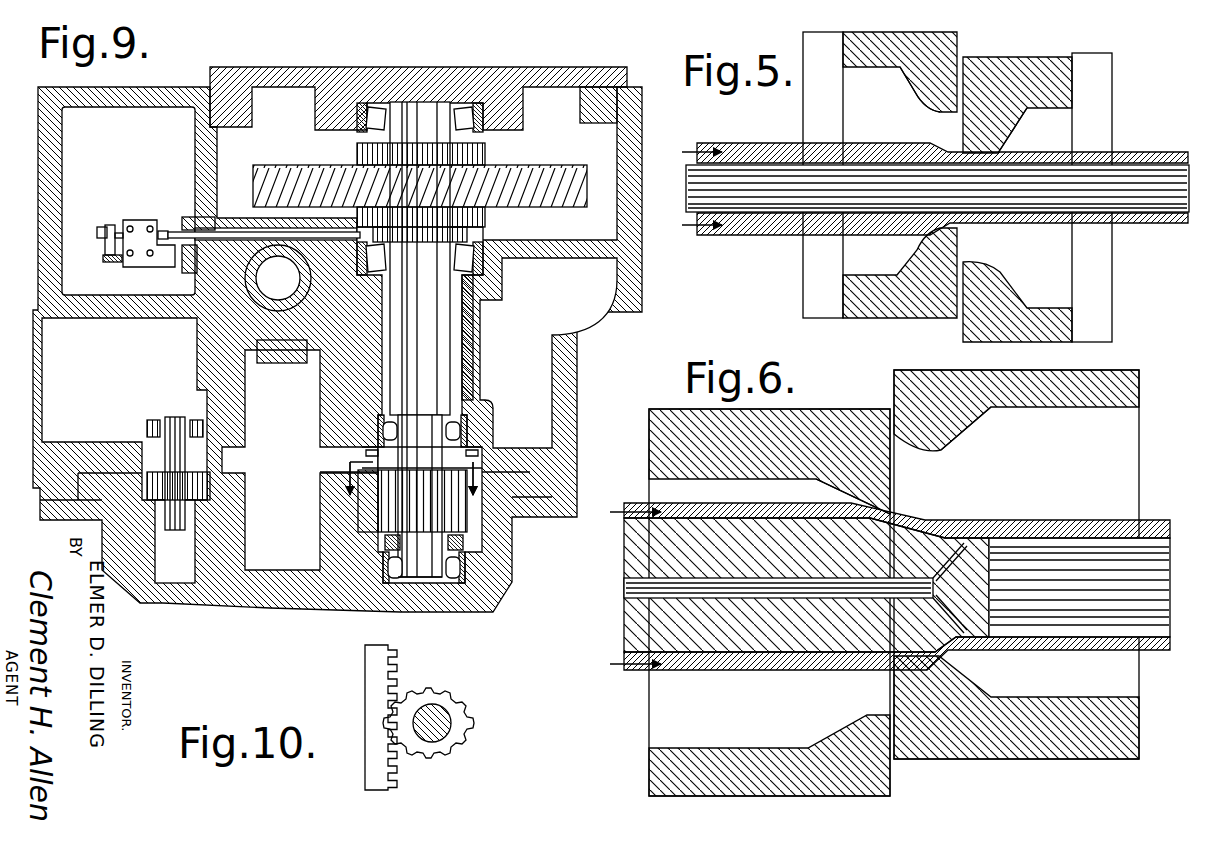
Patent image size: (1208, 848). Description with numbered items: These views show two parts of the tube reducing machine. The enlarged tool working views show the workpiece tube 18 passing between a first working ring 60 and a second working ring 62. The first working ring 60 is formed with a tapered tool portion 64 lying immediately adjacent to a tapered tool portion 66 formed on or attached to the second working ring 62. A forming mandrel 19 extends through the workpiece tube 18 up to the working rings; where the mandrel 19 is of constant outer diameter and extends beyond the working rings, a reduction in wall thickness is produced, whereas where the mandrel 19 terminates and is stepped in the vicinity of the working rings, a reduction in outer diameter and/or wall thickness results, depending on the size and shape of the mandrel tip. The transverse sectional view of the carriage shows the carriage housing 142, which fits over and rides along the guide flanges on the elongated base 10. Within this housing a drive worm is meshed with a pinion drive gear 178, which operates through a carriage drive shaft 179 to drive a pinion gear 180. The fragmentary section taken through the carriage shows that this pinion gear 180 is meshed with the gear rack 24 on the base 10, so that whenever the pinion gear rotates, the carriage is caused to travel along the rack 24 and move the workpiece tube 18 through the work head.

In FIG. 9, the carriage housing 142 is at (303, 72).
In FIG. 9, the pinion drive gear 178 is at (307, 170).
In FIG. 9, the carriage drive shaft 179 is at (473, 346).
In FIG. 9, the pinion gear 180 is at (408, 502).
In FIG. 10, the pinion gear 180 is at (452, 700).
In FIG. 9, the gear rack 24 is at (368, 497).
In FIG. 10, the gear rack 24 is at (370, 668).
In FIG. 9, the elongated base 10 is at (419, 481).
In FIG. 5, the first working ring 60 is at (926, 40).
In FIG. 6, the first working ring 60 is at (845, 423).
In FIG. 5, the second working ring 62 is at (1025, 60).
In FIG. 6, the second working ring 62 is at (1120, 387).
In FIG. 5, the tapered tool portion 64 is at (936, 112).
In FIG. 6, the tapered tool portion 64 is at (890, 505).
In FIG. 5, the tapered tool portion 66 is at (1012, 147).
In FIG. 6, the tapered tool portion 66 is at (944, 452).
In FIG. 5, the workpiece tube 18 is at (758, 232).
In FIG. 6, the workpiece tube 18 is at (637, 672).
In FIG. 5, the forming mandrel 19 is at (1165, 213).
In FIG. 6, the forming mandrel 19 is at (816, 632).